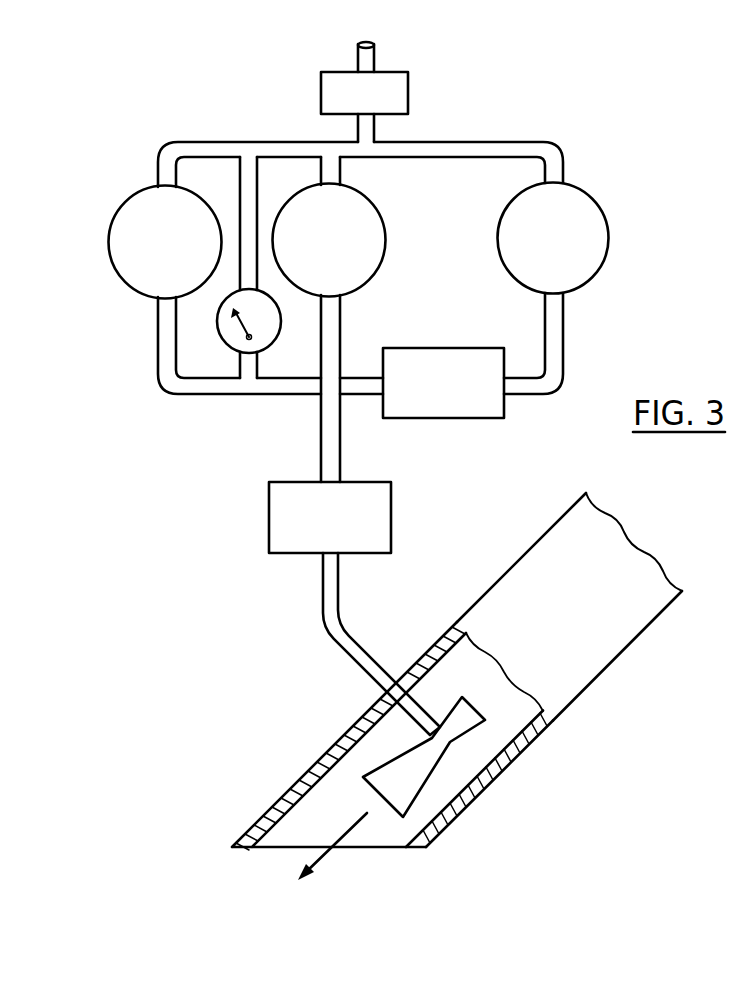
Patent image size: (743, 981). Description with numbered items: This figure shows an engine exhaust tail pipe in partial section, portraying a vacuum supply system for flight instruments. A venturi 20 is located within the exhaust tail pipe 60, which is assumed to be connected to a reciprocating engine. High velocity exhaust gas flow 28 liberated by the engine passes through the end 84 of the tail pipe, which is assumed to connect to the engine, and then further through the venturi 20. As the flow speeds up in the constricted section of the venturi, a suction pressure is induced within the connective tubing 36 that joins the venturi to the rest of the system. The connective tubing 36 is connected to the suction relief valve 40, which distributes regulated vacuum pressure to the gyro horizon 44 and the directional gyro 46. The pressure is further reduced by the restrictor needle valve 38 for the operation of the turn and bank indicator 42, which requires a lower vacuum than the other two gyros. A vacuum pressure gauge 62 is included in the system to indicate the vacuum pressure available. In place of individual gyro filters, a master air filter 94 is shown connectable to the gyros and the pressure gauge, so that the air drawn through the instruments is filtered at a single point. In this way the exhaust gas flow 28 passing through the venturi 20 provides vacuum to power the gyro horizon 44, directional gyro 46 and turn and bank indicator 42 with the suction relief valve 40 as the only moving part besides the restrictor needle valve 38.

The air filter 94 is at (410, 85).
The directional gyro 46 is at (200, 200).
The gyro horizon 44 is at (378, 204).
The turn and bank indicator 42 is at (521, 190).
The vacuum pressure gauge 62 is at (217, 331).
The restrictor needle valve 38 is at (432, 348).
The suction relief valve 40 is at (283, 482).
The connective tubing 36 is at (321, 607).
The exhaust tail pipe 60 is at (489, 597).
The end 84 is at (610, 517).
The venturi 20 is at (443, 748).
The exhaust gas flow 28 is at (329, 851).